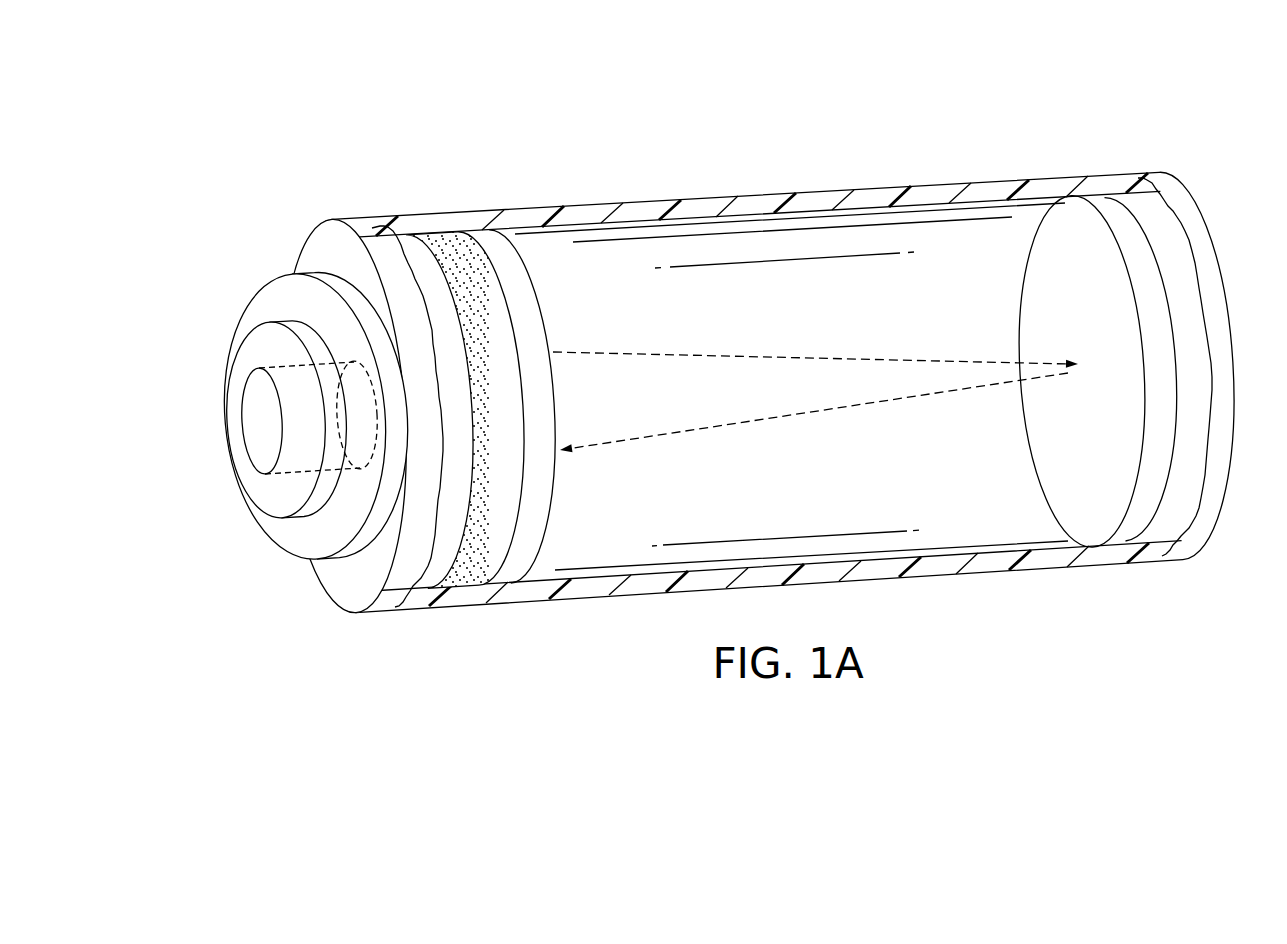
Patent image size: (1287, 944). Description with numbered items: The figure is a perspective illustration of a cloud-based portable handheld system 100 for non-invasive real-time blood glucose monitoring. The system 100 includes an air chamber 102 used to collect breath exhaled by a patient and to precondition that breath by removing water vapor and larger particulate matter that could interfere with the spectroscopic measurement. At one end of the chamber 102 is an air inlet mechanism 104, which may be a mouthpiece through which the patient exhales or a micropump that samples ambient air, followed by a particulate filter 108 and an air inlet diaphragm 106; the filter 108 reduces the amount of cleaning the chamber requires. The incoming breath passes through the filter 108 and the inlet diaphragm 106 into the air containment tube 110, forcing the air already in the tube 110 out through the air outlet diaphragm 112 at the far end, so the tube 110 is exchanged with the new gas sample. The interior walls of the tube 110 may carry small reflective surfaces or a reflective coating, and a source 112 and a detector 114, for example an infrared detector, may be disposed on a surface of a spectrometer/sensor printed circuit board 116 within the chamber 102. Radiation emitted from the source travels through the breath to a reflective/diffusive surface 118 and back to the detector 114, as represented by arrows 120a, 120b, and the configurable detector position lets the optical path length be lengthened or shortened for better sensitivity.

The cloud-based portable handheld system 100 is at (758, 326).
The air chamber 102 is at (762, 205).
The air inlet mechanism 104 is at (240, 385).
The air inlet diaphragm 106 is at (452, 556).
The particulate filter 108 is at (445, 240).
The air containment tube 110 is at (882, 180).
The air outlet diaphragm 112 is at (1176, 230).
The detector 114 is at (574, 466).
The spectrometer/sensor printed circuit board 116 is at (540, 517).
The reflective/diffusive surface 118 is at (1047, 456).
The arrow 120a is at (792, 356).
The arrow 120b is at (812, 428).